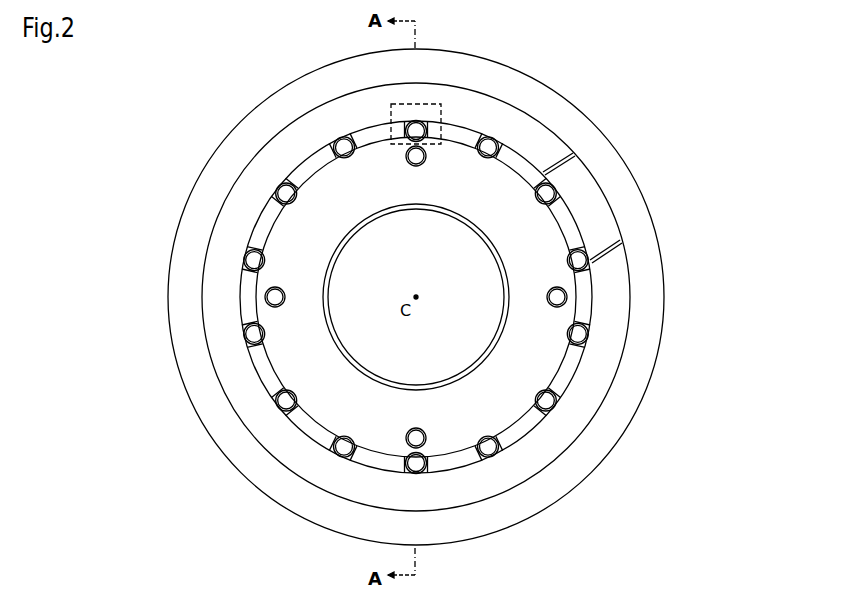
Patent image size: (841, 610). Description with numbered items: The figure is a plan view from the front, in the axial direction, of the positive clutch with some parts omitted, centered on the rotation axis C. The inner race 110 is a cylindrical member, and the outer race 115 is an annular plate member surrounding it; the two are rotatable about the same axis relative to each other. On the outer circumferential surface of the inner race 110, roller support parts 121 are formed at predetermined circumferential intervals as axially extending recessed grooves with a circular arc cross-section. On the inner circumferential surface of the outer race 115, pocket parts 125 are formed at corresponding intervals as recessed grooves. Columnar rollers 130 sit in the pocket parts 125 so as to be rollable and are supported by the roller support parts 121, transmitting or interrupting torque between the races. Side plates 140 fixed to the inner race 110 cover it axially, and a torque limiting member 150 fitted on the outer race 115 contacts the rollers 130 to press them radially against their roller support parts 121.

The inner race 110 is at (297, 232).
The outer race 115 is at (262, 363).
The roller support part 121 is at (283, 188).
The pocket part 125 is at (275, 407).
The roller 130 is at (493, 140).
The side plate 140 is at (625, 187).
The torque limiting member 150 is at (607, 333).